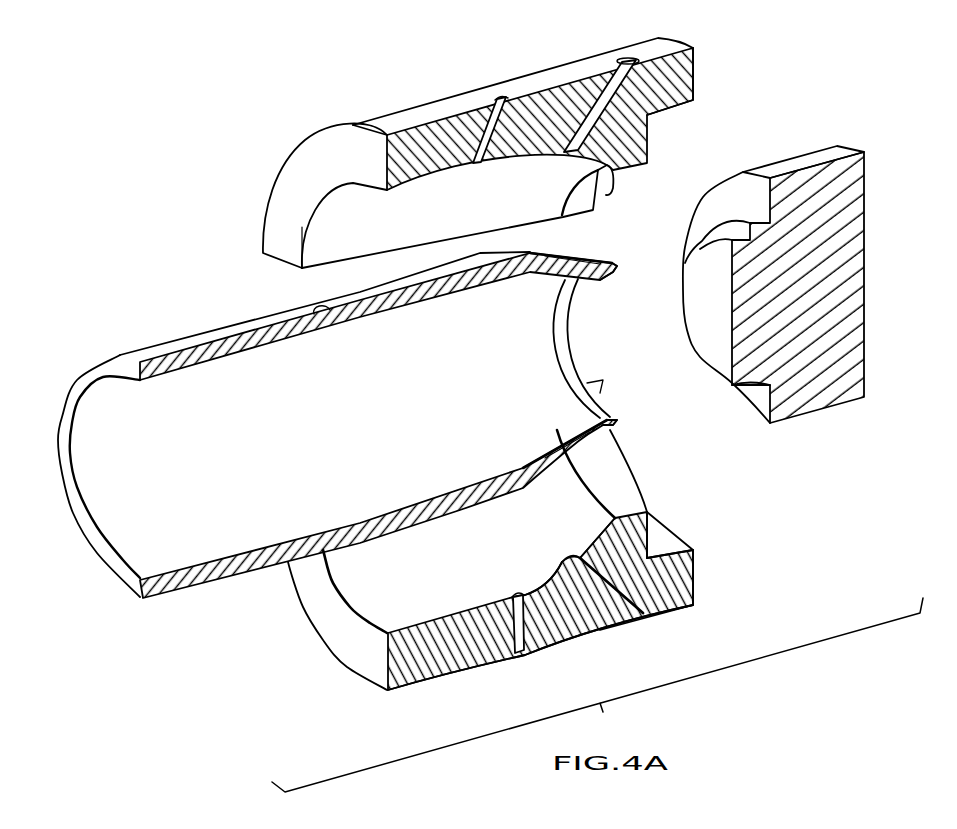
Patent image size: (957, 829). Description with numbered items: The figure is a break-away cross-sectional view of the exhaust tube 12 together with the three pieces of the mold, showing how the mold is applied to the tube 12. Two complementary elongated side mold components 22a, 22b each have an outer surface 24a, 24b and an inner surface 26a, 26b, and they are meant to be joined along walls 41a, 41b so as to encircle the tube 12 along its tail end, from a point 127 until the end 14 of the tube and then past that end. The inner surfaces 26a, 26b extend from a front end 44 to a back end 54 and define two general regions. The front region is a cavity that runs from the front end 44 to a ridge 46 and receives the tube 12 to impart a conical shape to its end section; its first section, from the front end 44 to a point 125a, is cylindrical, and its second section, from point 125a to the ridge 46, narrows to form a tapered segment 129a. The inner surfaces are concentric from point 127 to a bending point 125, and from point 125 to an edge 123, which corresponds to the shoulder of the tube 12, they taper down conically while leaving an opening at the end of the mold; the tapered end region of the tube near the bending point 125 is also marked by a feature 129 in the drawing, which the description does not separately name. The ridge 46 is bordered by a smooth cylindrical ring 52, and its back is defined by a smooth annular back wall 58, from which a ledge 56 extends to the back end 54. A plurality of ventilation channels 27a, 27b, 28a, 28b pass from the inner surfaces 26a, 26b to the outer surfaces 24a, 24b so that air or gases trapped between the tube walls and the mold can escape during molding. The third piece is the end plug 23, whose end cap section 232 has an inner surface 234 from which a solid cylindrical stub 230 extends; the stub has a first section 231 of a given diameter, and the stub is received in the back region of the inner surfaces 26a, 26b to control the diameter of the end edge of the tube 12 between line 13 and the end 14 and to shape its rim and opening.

The tube 12 is at (187, 345).
The line (point) on tube 13 is at (607, 277).
The end of tube 14 is at (618, 270).
The side mold component 22a is at (587, 63).
The side mold component 22b is at (557, 642).
The end plug 23 is at (868, 267).
The outer surface 24a is at (467, 100).
The outer surface 24b is at (328, 637).
The inner surface 26a is at (318, 235).
The inner surface 26b is at (377, 573).
The ventilation channel 27a is at (520, 97).
The ventilation channel 27b is at (517, 642).
The ventilation channel 28a is at (638, 62).
The ventilation channel 28b is at (628, 612).
The wall 41a is at (413, 163).
The wall 41b is at (443, 662).
The front end 44 is at (315, 165).
The ridge 46 is at (590, 163).
The smooth cylindrical ring 52 is at (602, 485).
The back end 54 is at (693, 57).
The ledge 56 is at (672, 547).
The back wall 58 is at (650, 540).
The edge (point) on inner surfaces 123 is at (608, 182).
The bending point 125 is at (510, 253).
The point on inner surface 125a is at (535, 152).
The point on tube 127 is at (331, 314).
The groove 129 is at (563, 275).
The tapered segment 129a is at (580, 555).
The solid cylindrical stub 230 is at (720, 390).
The first section of stub 231 is at (750, 223).
The end cap section 232 is at (827, 397).
The inner surface of end cap 234 is at (732, 197).